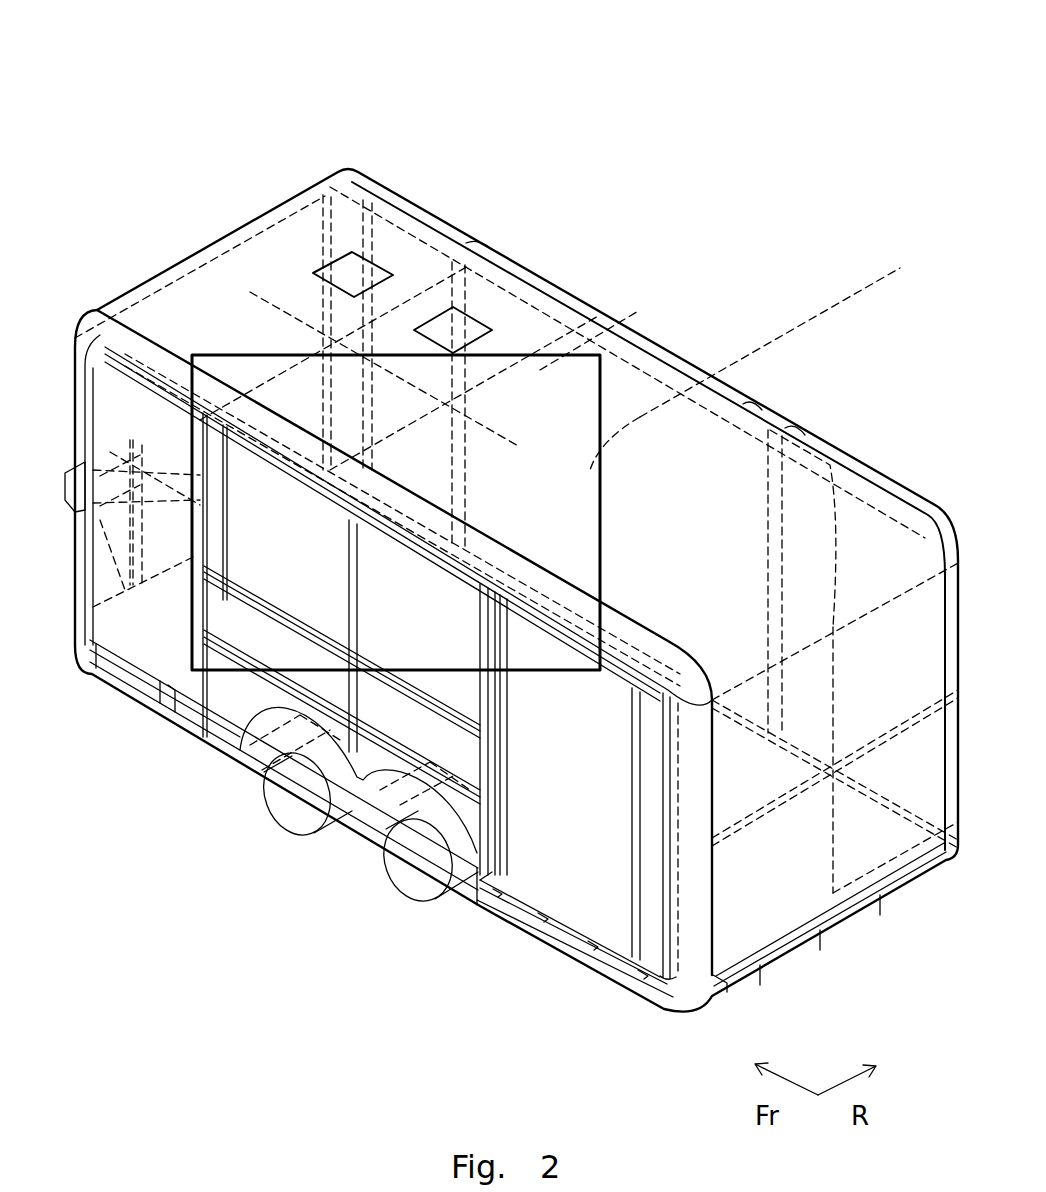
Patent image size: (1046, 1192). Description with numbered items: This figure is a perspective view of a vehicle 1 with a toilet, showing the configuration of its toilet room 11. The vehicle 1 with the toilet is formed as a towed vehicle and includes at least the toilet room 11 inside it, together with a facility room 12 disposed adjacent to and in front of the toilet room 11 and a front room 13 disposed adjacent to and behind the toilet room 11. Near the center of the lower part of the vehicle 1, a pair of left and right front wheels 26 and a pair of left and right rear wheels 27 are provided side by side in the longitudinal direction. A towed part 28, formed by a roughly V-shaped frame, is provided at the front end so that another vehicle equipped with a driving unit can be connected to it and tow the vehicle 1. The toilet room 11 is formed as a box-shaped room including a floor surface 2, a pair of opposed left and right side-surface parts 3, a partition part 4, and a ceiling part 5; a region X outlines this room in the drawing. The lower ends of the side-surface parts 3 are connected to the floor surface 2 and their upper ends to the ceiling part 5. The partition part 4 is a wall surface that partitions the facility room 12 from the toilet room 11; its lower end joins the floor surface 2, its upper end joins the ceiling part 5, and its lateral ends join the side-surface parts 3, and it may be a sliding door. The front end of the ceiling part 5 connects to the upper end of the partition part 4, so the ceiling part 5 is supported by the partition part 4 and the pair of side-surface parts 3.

The vehicle with a toilet 1 is at (333, 40).
The floor surface 2 is at (262, 785).
The side-surface parts 3 is at (640, 417).
The partition part 4 is at (115, 672).
The ceiling part 5 is at (543, 330).
The toilet room 11 is at (637, 268).
The facility room 12 is at (443, 176).
The front room 13 is at (880, 453).
The front wheels 26 is at (292, 823).
The rear wheels 27 is at (417, 893).
The towed part 28 is at (66, 472).
The region X is at (232, 356).